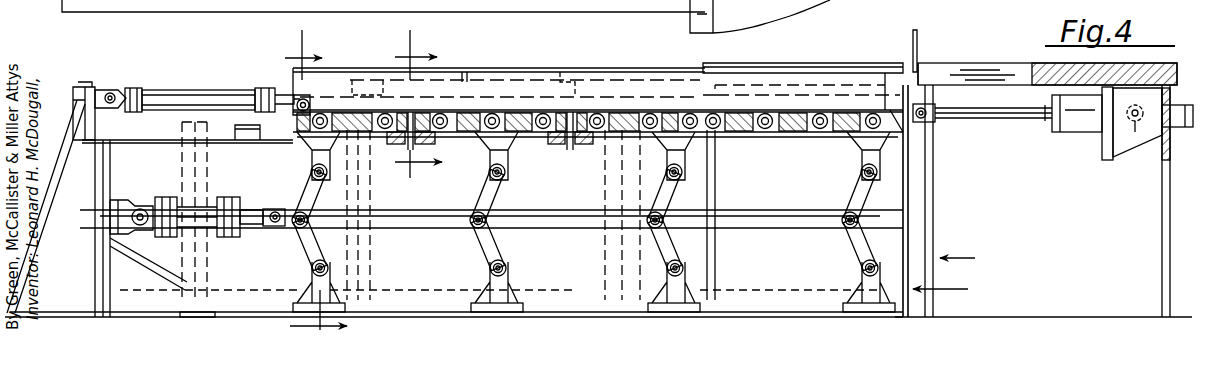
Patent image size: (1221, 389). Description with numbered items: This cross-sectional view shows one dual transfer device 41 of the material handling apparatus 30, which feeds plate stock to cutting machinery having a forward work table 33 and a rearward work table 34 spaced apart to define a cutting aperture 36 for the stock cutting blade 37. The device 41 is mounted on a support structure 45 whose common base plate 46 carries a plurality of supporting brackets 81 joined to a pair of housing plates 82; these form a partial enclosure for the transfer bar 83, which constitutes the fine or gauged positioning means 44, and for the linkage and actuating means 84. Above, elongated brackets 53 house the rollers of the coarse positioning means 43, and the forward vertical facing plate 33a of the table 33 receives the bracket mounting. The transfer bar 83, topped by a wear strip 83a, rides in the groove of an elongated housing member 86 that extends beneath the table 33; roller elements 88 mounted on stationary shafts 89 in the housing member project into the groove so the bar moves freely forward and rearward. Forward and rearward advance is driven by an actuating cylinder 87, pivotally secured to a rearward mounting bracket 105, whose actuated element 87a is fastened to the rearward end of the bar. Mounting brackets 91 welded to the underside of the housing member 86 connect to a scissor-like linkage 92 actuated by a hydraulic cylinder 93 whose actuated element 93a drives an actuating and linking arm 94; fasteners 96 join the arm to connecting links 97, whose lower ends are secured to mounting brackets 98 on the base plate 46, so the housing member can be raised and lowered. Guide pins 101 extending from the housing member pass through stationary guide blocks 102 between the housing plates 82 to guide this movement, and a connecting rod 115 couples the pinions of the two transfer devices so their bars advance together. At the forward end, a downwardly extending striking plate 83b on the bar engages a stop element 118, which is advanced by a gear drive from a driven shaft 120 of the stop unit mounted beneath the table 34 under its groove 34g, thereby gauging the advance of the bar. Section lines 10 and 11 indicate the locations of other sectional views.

The material handling apparatus 30 is at (134, 60).
The rearward mounting bracket 105 is at (87, 87).
The dual transfer device 41 is at (170, 86).
The actuating cylinder 87 is at (192, 92).
The actuated element 87a is at (292, 95).
The coarse positioning means 43 is at (248, 12).
The elongated bracket 53 is at (472, 2).
The transfer bar 83 is at (345, 80).
The wear strip 83a is at (528, 68).
The striking plate 83b is at (905, 118).
The housing plate 82 is at (626, 98).
The housing member 86 is at (465, 72).
The work table 33 is at (838, 64).
The forward vertical facing plate 33a is at (718, 197).
The stock cutting blade 37 is at (916, 33).
The groove or slot 34g is at (968, 70).
The cutting aperture 36 is at (920, 80).
The work table 34 is at (1052, 68).
The supporting bracket 81 is at (183, 165).
The mounting bracket 91 is at (302, 140).
The hydraulic cylinder 93 is at (216, 203).
The actuated element 93a is at (258, 230).
The guide pin 101 is at (399, 144).
The stationary guide block 102 is at (435, 143).
The connecting rod 115 is at (698, 129).
The roller element 88 is at (772, 130).
The stationary shaft 89 is at (818, 129).
The stop element 118 is at (1005, 118).
The driven shaft 120 is at (1136, 135).
The scissor-like linkage 92 is at (900, 195).
The linkage and actuating means 84 is at (900, 233).
The actuating and linking arm 94 is at (414, 216).
The fastener 96 is at (502, 228).
The connecting link 97 is at (488, 264).
The mounting bracket 98 is at (506, 290).
The base plate 46 is at (190, 318).
The section line 10 is at (292, 310).
The section line 11 is at (415, 112).
The fine or gauged positioning means 44 is at (969, 256).
The support structure 45 is at (951, 289).